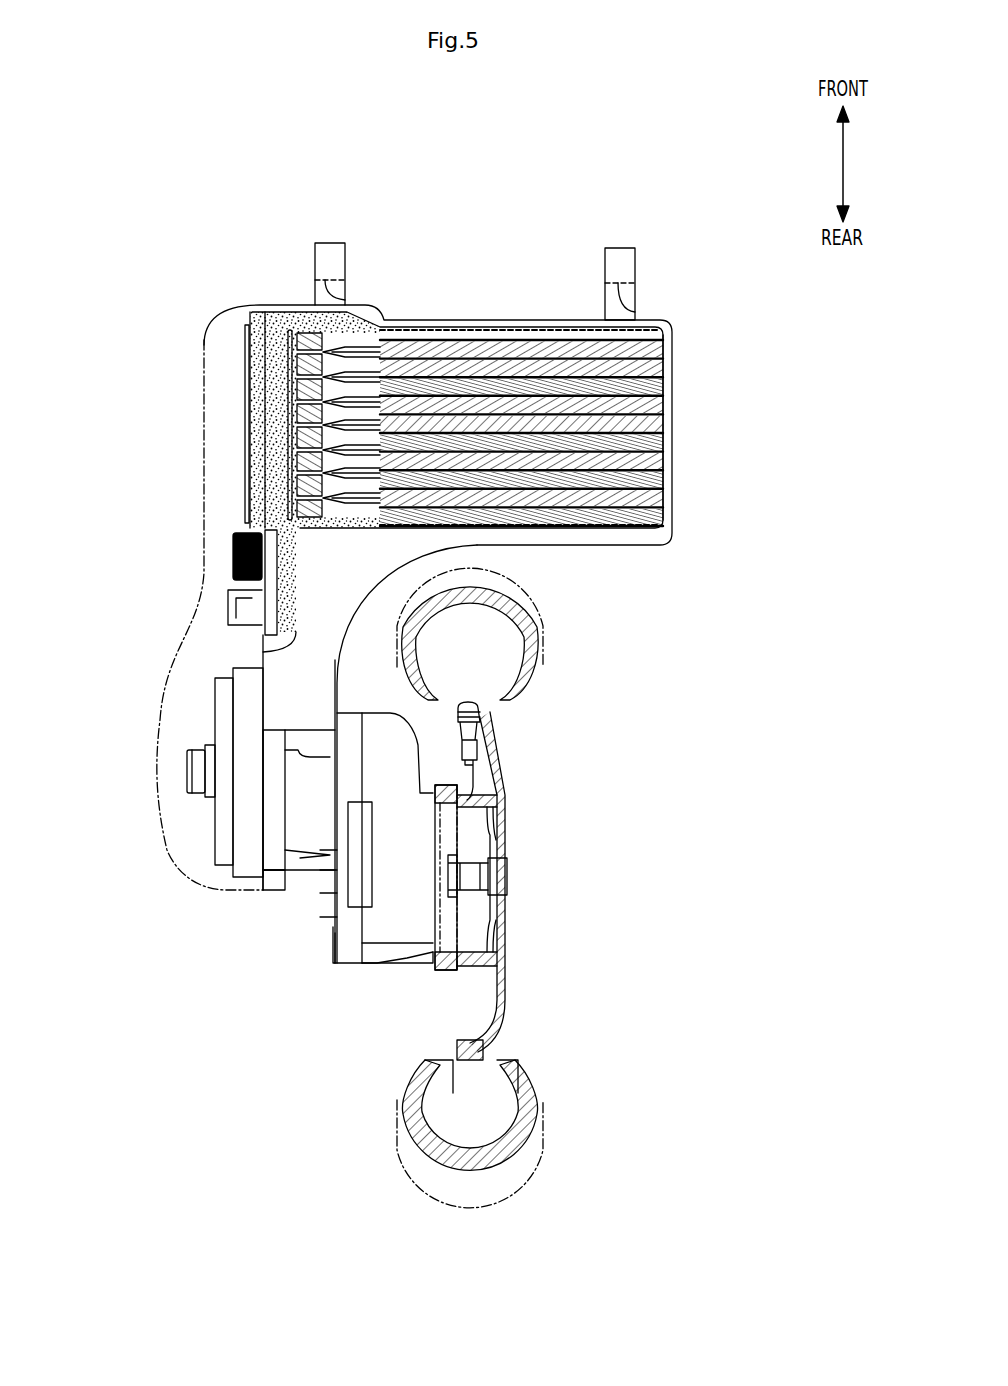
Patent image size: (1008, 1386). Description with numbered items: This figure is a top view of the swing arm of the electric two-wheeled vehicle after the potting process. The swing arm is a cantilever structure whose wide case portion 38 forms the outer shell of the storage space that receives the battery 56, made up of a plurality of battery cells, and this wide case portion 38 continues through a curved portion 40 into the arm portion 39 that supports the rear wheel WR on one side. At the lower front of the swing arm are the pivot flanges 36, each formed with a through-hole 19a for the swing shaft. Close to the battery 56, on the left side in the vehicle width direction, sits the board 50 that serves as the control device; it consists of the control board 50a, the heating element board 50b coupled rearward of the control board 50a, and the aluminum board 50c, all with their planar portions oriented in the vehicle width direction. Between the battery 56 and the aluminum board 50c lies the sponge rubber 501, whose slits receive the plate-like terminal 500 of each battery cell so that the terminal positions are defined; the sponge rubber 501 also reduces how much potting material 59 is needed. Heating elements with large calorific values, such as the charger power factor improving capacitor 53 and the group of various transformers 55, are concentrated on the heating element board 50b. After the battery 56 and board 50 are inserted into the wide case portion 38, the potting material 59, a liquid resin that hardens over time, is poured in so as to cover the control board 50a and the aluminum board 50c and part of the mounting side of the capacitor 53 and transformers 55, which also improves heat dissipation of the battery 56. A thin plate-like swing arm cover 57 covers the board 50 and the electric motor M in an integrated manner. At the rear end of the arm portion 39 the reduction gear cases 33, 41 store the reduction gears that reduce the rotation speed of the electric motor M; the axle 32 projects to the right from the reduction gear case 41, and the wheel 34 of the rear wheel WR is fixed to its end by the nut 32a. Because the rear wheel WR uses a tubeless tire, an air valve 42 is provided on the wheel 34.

The pivot flange 36 is at (315, 257).
The through-hole 19a is at (315, 297).
The wide case portion 38 is at (485, 317).
The potting material 59 is at (288, 352).
The sponge rubber 501 is at (297, 373).
The plate-like terminal 500 is at (262, 405).
The control board 50a is at (250, 412).
The aluminum board 50c is at (262, 428).
The board 50 is at (224, 473).
The battery 56 is at (672, 443).
The charger power factor improving capacitor 53 is at (232, 540).
The group of various transformers 55 is at (227, 610).
The heating element board 50b is at (262, 650).
The arm portion 39 is at (297, 678).
The curved portion 40 is at (363, 617).
The air valve 42 is at (478, 735).
The wheel 34 is at (493, 810).
The swing arm cover 57 is at (157, 805).
The electric motor M is at (200, 843).
The nut 32a is at (510, 882).
The reduction gear case 33 is at (337, 923).
The axle 32 is at (503, 920).
The reduction gear case 41 is at (388, 950).
The rear wheel WR is at (517, 1168).